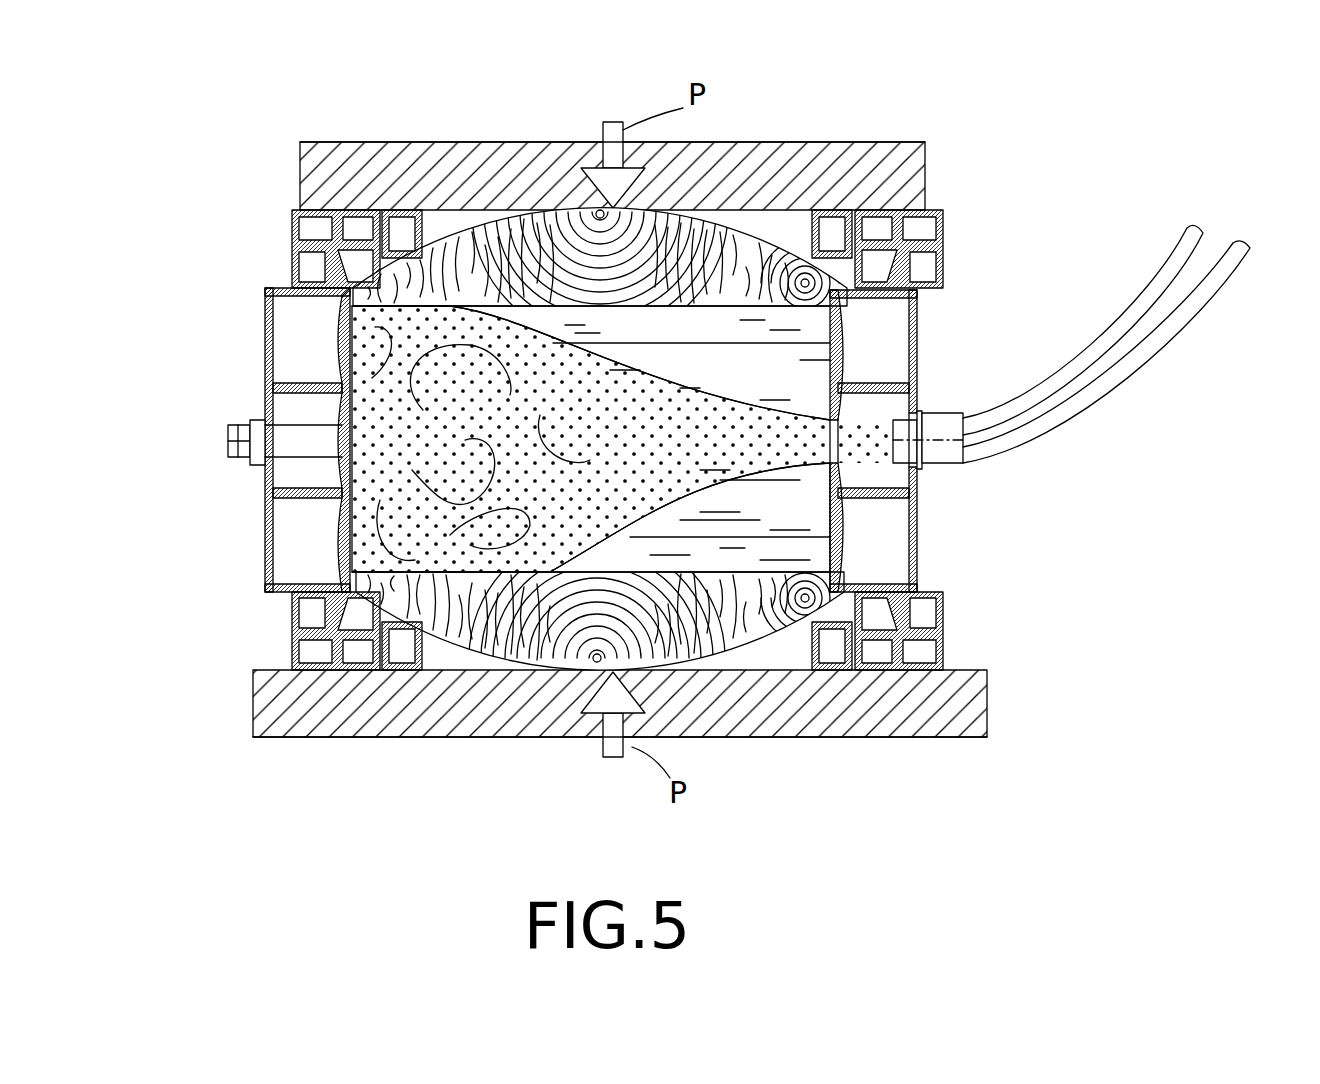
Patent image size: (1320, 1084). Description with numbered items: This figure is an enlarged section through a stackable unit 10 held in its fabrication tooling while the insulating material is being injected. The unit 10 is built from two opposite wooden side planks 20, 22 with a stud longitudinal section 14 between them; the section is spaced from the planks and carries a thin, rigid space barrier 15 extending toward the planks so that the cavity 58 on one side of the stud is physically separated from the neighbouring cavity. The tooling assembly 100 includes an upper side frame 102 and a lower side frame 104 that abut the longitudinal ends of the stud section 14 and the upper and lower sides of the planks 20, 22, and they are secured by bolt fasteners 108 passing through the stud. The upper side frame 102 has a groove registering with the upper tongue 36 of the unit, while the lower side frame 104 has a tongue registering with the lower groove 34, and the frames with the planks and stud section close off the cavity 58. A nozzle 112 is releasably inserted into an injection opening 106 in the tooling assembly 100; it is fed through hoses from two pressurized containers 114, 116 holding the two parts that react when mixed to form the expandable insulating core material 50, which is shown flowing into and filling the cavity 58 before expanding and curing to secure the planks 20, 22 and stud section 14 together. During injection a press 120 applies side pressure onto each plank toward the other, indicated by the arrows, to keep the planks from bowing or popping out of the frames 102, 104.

The stackable unit 10 is at (490, 208).
The stud longitudinal section 14 is at (691, 440).
The space barrier 15 is at (550, 320).
The first side plank 20 is at (718, 240).
The second side plank 22 is at (727, 648).
The lower groove 34 is at (847, 557).
The upper tongue 36 is at (370, 585).
The insulating core material 50 is at (440, 325).
The cavity 58 is at (805, 362).
The tooling assembly 100 is at (932, 826).
The upper side frame 102 is at (265, 533).
The lower side frame 104 is at (915, 533).
The injection opening 106 is at (842, 452).
The bolt fastener 108 is at (227, 437).
The nozzle 112 is at (947, 417).
The pressurized container 114 is at (1160, 282).
The pressurized container 116 is at (1160, 377).
The press 120 is at (880, 142).